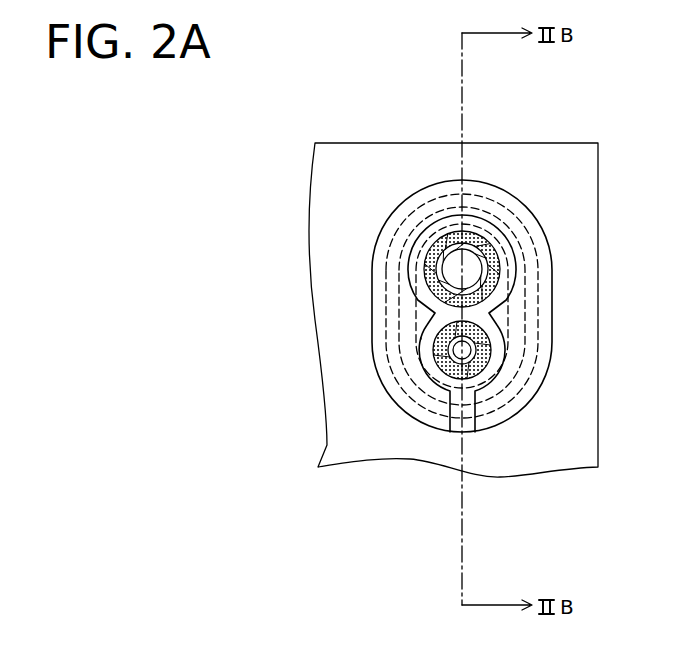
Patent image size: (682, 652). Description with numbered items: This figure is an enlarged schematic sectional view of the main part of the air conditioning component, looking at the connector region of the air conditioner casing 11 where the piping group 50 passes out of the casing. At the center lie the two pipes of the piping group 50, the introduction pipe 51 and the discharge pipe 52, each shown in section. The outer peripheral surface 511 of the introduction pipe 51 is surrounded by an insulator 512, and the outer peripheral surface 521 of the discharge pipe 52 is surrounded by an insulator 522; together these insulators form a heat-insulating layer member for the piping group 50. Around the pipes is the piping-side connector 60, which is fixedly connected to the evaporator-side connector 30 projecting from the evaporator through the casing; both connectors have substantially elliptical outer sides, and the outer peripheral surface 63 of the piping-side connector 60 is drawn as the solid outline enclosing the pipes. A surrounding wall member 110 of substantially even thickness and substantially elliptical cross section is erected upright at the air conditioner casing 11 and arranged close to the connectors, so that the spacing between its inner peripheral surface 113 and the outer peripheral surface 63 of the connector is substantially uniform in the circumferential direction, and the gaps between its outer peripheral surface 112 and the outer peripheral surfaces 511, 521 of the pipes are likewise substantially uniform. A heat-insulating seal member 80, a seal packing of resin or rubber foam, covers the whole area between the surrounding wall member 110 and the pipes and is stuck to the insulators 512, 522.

The air conditioner casing 11 is at (343, 143).
The heat-insulating seal member 80 is at (421, 191).
The outer peripheral surface of the surrounding wall member 112 is at (384, 247).
The surrounding wall member 110 is at (390, 318).
The inner peripheral surface of the surrounding wall member 113 is at (410, 390).
The piping-side connector 60 is at (399, 296).
The evaporator-side connector 30 is at (364, 323).
The outer peripheral surface of the piping-side connector 63 is at (421, 338).
The piping group 50 is at (466, 323).
The introduction pipe 51 is at (436, 423).
The outer peripheral surface of the introduction pipe 511 is at (460, 364).
The insulator 512 is at (446, 378).
The discharge pipe 52 is at (503, 299).
The outer peripheral surface of the discharge pipe 521 is at (476, 247).
The insulator 522 is at (493, 243).